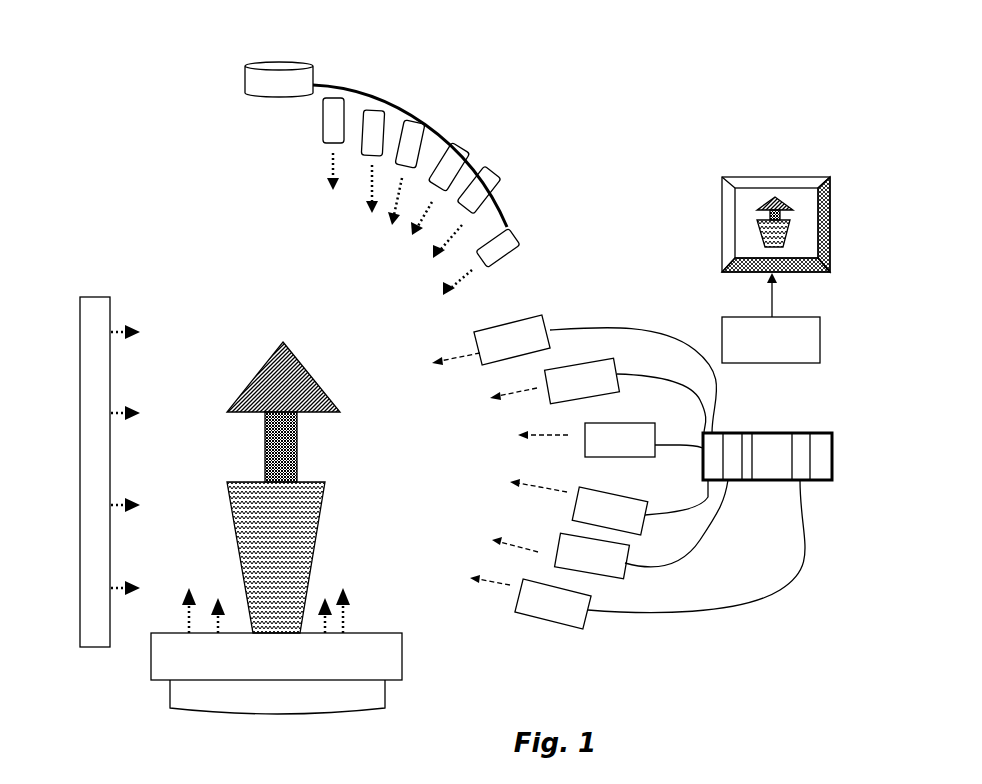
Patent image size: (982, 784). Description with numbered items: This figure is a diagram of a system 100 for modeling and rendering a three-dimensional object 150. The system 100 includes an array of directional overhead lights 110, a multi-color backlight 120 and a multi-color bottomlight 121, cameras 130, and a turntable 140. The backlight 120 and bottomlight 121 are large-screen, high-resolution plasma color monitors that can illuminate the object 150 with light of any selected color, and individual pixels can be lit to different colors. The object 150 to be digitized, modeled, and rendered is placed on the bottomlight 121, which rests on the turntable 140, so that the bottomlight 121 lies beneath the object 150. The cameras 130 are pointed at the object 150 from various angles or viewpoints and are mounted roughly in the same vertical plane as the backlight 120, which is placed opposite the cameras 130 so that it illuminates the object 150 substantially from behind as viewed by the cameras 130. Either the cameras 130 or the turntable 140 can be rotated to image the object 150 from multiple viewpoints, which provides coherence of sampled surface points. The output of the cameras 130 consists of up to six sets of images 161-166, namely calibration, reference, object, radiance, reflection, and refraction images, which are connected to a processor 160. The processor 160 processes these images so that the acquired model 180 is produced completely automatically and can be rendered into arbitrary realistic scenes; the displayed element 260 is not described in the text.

The system 100 is at (410, 448).
The array of directional overhead lights 110 is at (432, 118).
The multi-color backlight 120 is at (115, 296).
The multi-color bottomlight 121 is at (363, 633).
The cameras 130 is at (540, 314).
The turntable 140 is at (385, 703).
The object 150 is at (253, 377).
The processor 160 is at (820, 327).
The sets of images 161-166 is at (832, 455).
The acquired model 180 is at (762, 235).
The displayed image 260 is at (828, 250).